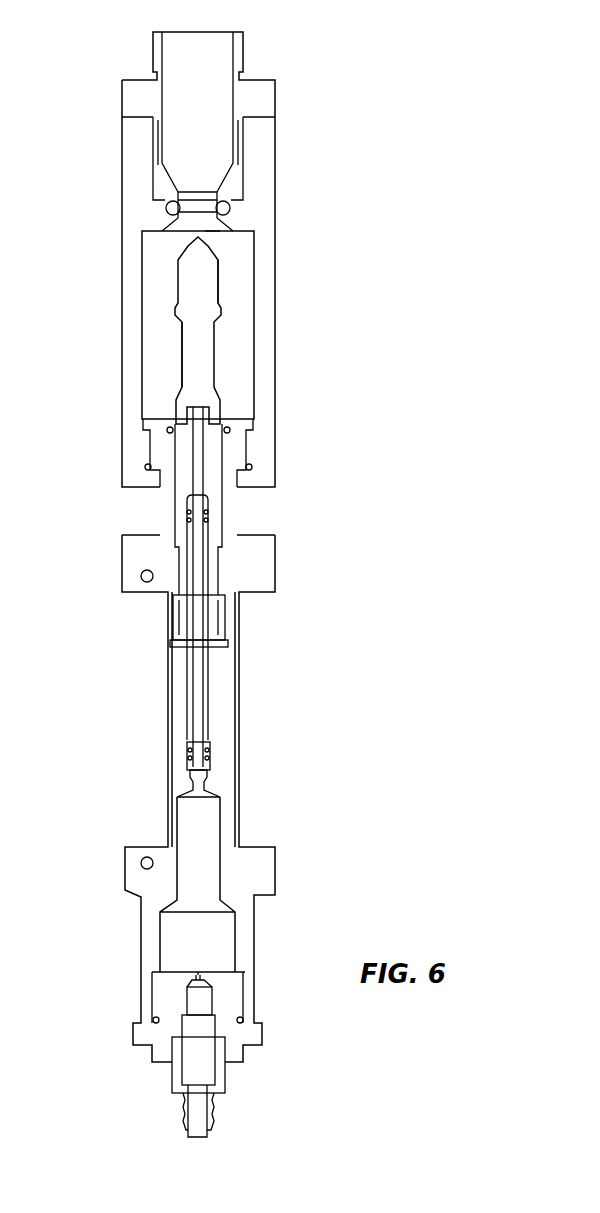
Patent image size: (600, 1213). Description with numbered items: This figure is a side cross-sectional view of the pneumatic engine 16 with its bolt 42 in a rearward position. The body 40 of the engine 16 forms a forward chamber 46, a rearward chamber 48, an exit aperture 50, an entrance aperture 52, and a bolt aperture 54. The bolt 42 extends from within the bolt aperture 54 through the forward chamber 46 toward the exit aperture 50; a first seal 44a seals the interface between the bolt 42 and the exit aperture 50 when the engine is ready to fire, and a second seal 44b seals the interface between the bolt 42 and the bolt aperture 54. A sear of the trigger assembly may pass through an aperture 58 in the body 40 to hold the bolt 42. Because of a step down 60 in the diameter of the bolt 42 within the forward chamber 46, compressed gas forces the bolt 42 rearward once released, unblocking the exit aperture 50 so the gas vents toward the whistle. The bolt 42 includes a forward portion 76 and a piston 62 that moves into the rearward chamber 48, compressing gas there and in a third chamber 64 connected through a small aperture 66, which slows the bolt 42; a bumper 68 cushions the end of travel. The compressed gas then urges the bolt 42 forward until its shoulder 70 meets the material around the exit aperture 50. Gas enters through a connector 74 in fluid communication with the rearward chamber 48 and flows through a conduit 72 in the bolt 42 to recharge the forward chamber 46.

The engine 16 is at (452, 270).
The body 40 is at (250, 702).
The bolt 42 is at (172, 380).
The first seal 44a is at (166, 207).
The second seal 44b is at (226, 431).
The forward chamber 46 is at (140, 252).
The rearward chamber 48 is at (212, 767).
The exit aperture 50 is at (212, 233).
The entrance aperture 52 is at (190, 782).
The bolt aperture 54 is at (225, 567).
The aperture 58 is at (175, 620).
The step down 60 is at (222, 393).
The piston 62 is at (207, 618).
The third chamber 64 is at (222, 837).
The small aperture 66 is at (192, 981).
The bumper 68 is at (178, 643).
The shoulder 70 is at (217, 310).
The conduit 72 is at (205, 471).
The connector 74 is at (185, 1122).
The forward portion 76 is at (196, 336).